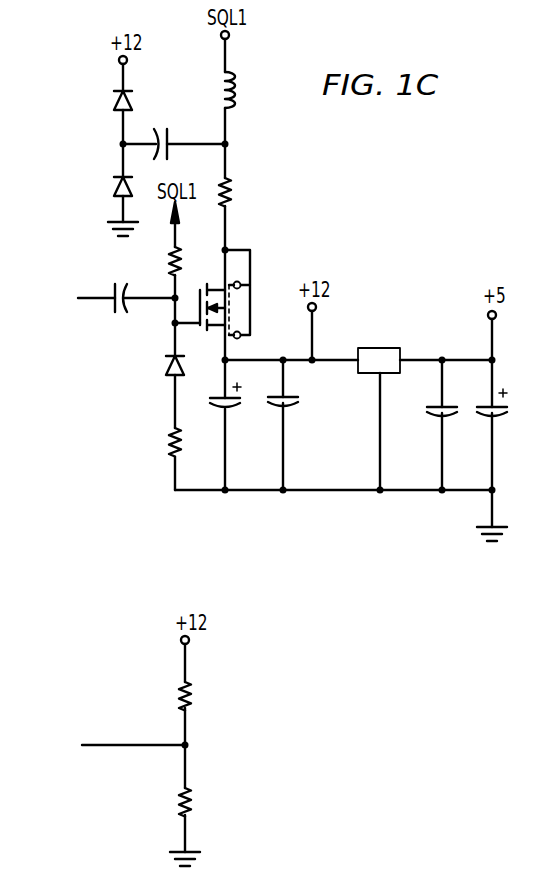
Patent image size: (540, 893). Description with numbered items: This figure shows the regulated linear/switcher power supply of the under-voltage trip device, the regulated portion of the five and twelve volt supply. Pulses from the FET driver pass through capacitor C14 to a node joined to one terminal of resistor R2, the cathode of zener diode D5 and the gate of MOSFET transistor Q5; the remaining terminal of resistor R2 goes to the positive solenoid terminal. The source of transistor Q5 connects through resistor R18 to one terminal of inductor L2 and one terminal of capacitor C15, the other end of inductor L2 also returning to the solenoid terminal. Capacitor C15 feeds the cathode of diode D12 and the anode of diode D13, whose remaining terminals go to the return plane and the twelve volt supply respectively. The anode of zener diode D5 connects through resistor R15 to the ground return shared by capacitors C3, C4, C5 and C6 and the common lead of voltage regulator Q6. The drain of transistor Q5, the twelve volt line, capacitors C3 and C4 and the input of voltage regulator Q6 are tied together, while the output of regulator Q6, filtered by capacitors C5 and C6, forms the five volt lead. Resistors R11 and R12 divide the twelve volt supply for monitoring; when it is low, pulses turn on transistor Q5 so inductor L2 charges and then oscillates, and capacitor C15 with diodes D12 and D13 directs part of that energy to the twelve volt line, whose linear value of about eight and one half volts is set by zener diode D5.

The diode D13 is at (106, 102).
The diode D12 is at (106, 186).
The capacitor C15 is at (163, 128).
The inductor L2 is at (211, 90).
The resistor R18 is at (245, 191).
The resistor R2 is at (161, 262).
The capacitor C14 is at (122, 313).
The MOSFET transistor Q5 is at (223, 294).
The zener diode D5 is at (160, 364).
The capacitor C3 is at (213, 400).
The resistor R15 is at (159, 442).
The capacitor C4 is at (297, 403).
The voltage regulator Q6 is at (379, 347).
The capacitor C5 is at (427, 411).
The capacitor C6 is at (505, 407).
The resistor R11 is at (204, 695).
The resistor R12 is at (204, 802).